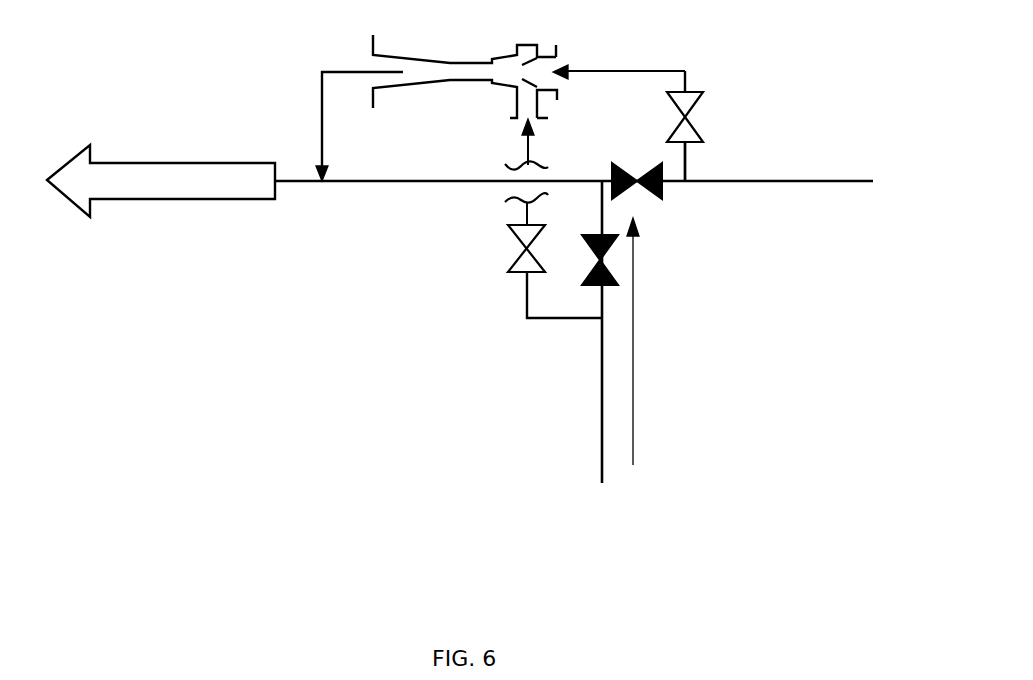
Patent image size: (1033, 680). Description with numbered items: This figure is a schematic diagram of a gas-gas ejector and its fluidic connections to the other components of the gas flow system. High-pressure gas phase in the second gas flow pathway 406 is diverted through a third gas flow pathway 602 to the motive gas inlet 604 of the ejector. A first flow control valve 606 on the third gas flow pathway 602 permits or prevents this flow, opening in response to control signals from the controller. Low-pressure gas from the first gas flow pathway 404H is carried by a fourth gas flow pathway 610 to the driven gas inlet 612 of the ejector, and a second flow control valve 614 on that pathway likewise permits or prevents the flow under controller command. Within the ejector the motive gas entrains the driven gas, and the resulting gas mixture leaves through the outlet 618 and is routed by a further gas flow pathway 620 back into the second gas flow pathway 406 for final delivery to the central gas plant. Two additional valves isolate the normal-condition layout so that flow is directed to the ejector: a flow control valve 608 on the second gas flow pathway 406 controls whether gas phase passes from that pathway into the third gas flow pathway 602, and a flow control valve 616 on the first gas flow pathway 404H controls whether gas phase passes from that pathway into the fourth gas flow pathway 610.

The second gas flow pathway 406 is at (845, 182).
The first gas flow pathway 404H is at (600, 437).
The third gas flow pathway 602 is at (687, 155).
The motive gas inlet 604 is at (553, 63).
The first flow control valve 606 is at (687, 127).
The flow control valve 608 is at (655, 168).
The fourth gas flow pathway 610 is at (565, 320).
The driven gas inlet 612 is at (523, 123).
The second flow control valve 614 is at (514, 238).
The flow control valve 616 is at (608, 250).
The outlet 618 is at (356, 56).
The gas flow pathway 620 is at (322, 125).